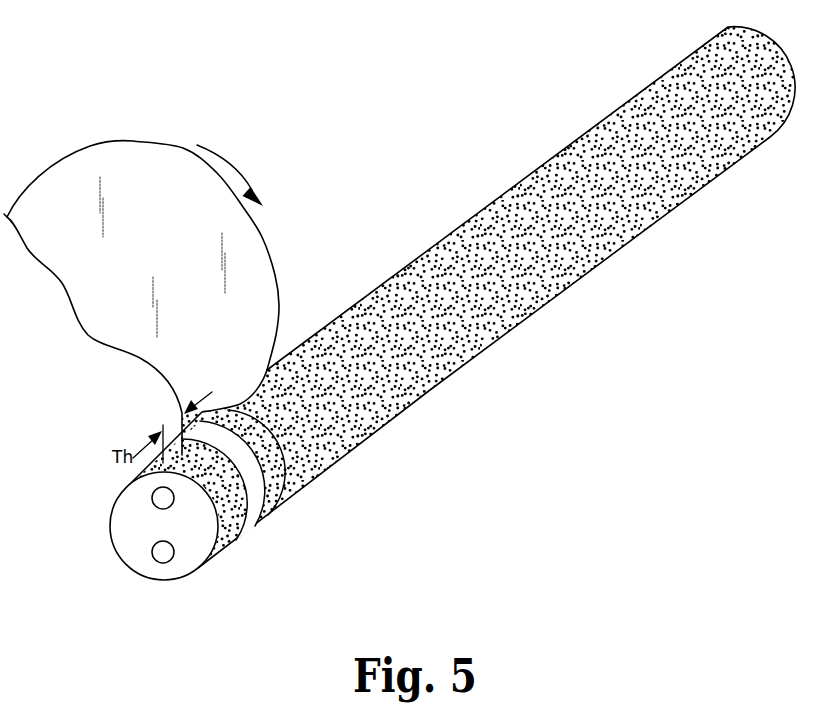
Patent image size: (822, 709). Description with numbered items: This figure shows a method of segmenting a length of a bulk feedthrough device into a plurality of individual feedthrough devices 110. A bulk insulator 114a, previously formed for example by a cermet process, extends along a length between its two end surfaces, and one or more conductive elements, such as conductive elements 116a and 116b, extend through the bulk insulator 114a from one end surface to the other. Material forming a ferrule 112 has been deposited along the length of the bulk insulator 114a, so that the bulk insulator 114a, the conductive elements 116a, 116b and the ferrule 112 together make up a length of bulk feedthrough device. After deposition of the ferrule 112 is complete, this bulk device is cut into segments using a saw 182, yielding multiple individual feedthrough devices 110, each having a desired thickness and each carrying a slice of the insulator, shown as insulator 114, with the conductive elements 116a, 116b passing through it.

The individual feedthrough device 110 is at (201, 571).
The ferrule 112 is at (227, 552).
The distal tip 114 is at (121, 496).
The bulk insulator 114a is at (518, 350).
The conductive element 116a is at (155, 505).
The conductive element 116b is at (152, 553).
The saw 182 is at (270, 249).